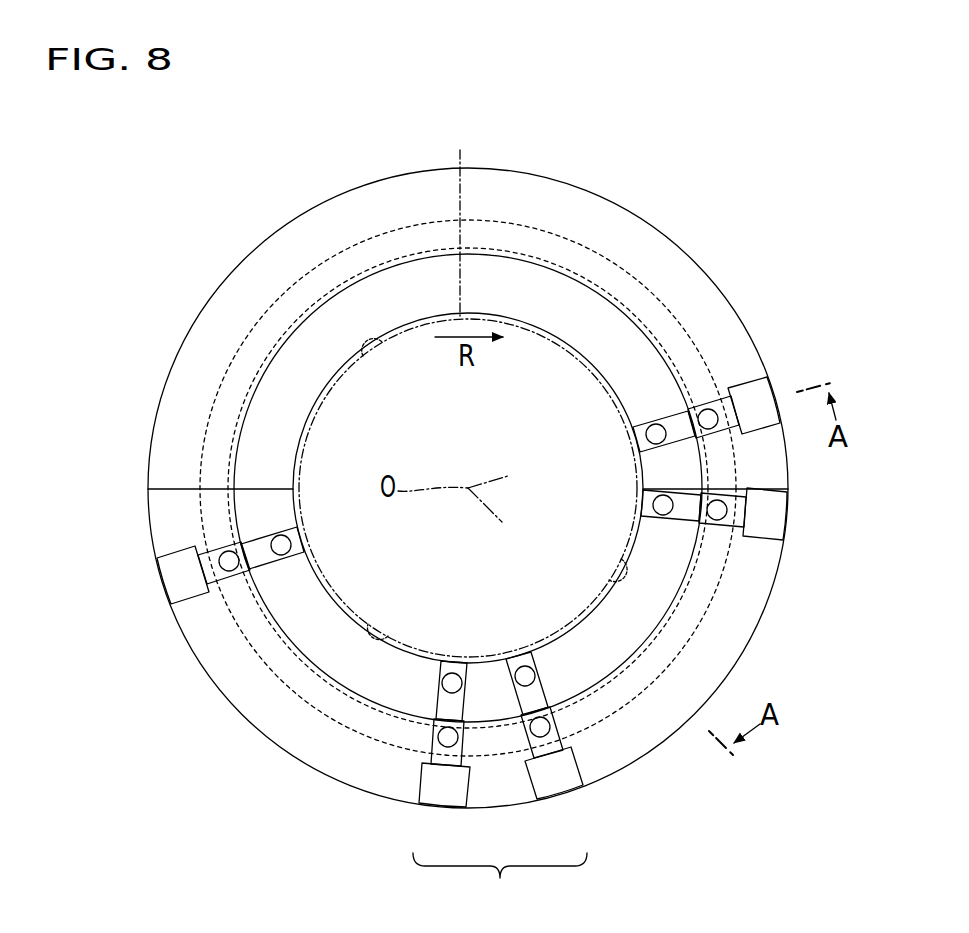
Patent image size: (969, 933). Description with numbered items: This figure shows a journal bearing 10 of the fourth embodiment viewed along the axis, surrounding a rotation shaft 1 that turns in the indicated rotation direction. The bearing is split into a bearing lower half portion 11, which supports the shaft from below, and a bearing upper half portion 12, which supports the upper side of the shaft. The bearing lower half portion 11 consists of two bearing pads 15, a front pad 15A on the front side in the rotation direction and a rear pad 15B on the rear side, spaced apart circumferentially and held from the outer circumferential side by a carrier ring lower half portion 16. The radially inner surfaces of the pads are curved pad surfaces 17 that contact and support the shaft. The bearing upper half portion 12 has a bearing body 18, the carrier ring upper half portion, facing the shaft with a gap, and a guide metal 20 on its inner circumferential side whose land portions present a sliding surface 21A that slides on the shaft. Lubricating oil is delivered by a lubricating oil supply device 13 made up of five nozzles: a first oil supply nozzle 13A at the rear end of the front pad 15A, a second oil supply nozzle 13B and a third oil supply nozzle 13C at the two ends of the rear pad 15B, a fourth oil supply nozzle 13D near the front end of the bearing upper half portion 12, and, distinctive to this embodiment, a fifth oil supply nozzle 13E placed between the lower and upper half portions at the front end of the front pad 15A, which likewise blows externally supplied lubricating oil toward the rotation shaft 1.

The rotation shaft 1 is at (490, 213).
The journal bearing 10 is at (147, 170).
The bearing lower half portion 11 is at (178, 740).
The bearing upper half portion 12 is at (710, 206).
The lubricating oil supply device 13 is at (592, 441).
The first oil supply nozzle 13A is at (452, 683).
The second oil supply nozzle 13B is at (523, 676).
The third oil supply nozzle 13C is at (660, 506).
The fourth oil supply nozzle 13D is at (655, 434).
The fifth oil supply nozzle 13E is at (280, 548).
The bearing pads 15 is at (500, 885).
The front pad 15A is at (412, 708).
The rear pad 15B is at (572, 690).
The carrier ring lower half portion 16 is at (158, 522).
The pad surfaces 17 is at (612, 562).
The bearing body 18 is at (158, 458).
The guide metal 20 is at (305, 400).
The sliding surface 21A is at (372, 343).